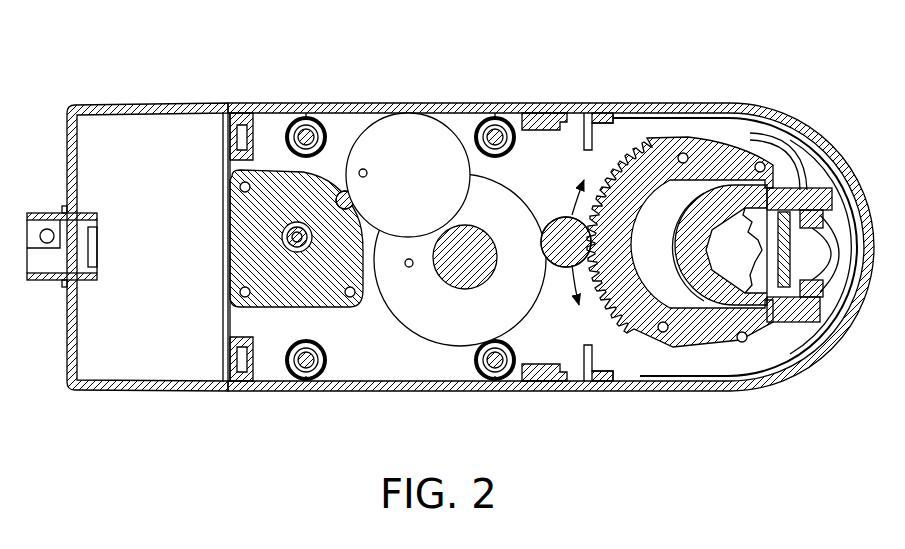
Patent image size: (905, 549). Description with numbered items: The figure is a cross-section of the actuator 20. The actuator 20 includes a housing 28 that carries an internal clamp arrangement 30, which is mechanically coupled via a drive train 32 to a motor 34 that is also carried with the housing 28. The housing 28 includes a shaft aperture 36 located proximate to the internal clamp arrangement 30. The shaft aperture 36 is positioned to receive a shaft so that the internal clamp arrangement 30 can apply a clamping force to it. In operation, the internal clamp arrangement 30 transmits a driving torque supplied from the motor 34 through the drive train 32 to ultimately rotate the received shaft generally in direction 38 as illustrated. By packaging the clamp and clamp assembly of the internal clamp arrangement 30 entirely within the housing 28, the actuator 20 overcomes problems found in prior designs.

The actuator 20 is at (108, 419).
The housing 28 is at (434, 90).
The internal clamp arrangement 30 is at (610, 340).
The drive train 32 is at (400, 349).
The motor 34 is at (278, 324).
The shaft aperture 36 is at (746, 246).
The direction 38 is at (560, 270).